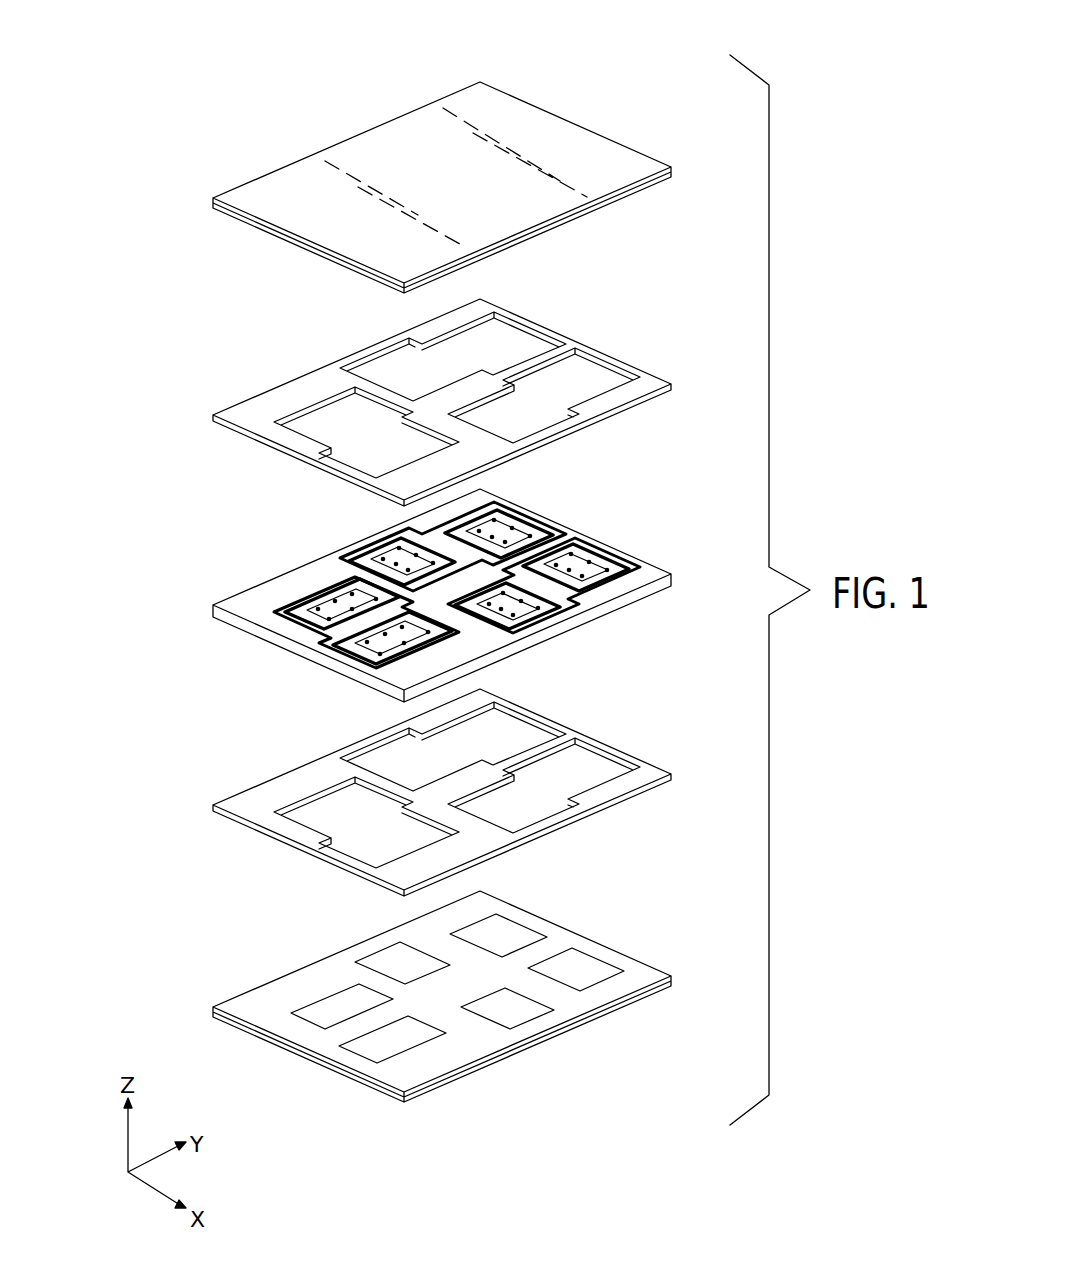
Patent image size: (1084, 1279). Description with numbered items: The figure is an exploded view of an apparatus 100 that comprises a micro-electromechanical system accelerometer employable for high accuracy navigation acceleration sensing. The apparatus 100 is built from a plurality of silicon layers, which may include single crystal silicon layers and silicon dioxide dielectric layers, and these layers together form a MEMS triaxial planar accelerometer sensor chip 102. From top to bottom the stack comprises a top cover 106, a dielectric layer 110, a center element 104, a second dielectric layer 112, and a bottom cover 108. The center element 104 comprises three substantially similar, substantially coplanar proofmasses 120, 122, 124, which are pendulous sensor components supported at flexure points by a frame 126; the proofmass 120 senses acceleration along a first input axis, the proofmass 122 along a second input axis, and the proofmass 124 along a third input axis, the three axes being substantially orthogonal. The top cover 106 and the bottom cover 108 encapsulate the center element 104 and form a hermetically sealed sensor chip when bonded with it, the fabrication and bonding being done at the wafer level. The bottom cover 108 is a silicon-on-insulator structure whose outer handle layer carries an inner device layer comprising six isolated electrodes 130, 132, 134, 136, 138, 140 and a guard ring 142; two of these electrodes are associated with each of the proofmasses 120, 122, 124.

The apparatus 100 is at (207, 37).
The MEMS triaxial planar accelerometer sensor chip 102 is at (136, 244).
The center element 104 is at (439, 595).
The top cover 106 is at (351, 139).
The bottom cover 108 is at (425, 1006).
The dielectric layer 110 is at (316, 367).
The dielectric layer 112 is at (268, 775).
The proofmass 120 is at (345, 623).
The proofmass 122 is at (550, 585).
The proofmass 124 is at (445, 540).
The frame 126 is at (470, 643).
The electrode 130 is at (327, 1012).
The electrode 132 is at (392, 1043).
The electrode 134 is at (515, 1008).
The electrode 136 is at (583, 968).
The electrode 138 is at (502, 935).
The electrode 140 is at (392, 965).
The guard ring 142 is at (477, 1043).